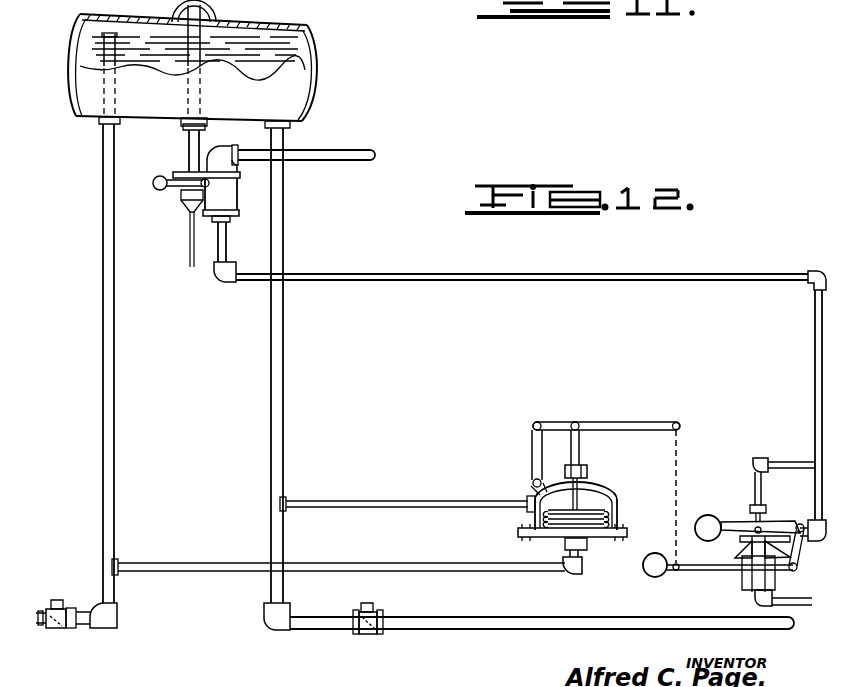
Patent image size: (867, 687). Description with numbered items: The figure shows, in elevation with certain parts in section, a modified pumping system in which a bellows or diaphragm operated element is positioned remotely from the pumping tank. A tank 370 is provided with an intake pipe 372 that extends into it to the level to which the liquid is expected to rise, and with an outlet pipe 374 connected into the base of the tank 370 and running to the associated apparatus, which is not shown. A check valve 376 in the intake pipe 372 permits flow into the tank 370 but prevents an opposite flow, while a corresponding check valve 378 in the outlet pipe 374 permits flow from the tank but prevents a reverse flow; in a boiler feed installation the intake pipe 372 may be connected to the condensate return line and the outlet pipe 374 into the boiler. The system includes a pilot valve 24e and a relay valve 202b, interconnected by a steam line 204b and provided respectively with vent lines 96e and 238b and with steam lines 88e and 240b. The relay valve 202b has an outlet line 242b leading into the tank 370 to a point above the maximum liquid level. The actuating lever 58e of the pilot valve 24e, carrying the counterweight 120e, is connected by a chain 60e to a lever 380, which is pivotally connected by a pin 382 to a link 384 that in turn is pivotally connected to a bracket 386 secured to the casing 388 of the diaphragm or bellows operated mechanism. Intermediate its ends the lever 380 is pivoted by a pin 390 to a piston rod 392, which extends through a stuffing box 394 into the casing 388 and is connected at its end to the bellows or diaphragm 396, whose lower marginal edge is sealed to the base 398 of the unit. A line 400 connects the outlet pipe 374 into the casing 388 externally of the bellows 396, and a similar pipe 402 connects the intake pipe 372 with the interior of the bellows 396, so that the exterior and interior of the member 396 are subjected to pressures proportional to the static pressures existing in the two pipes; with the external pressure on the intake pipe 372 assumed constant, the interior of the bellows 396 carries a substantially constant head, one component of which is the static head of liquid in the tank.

The tank 370 is at (320, 58).
The intake pipe 372 is at (114, 347).
The outlet pipe 374 is at (283, 370).
The check valve 376 is at (64, 630).
The check valve 378 is at (380, 611).
The lever 380 is at (605, 426).
The pin 382 is at (537, 421).
The link 384 is at (534, 446).
The bracket 386 is at (532, 483).
The casing 388 is at (595, 491).
The pin 390 is at (575, 421).
The piston rod 392 is at (570, 447).
The stuffing box 394 is at (585, 470).
The bellows or diaphragm 396 is at (615, 501).
The base 398 is at (549, 545).
The line 400 is at (343, 501).
The pipe 402 is at (330, 563).
The steam line 204b is at (508, 277).
The steam line 240b is at (340, 152).
The outlet line 242b is at (190, 148).
The relay valve 202b is at (229, 196).
The vent line 238b is at (192, 244).
The steam line 88e is at (770, 462).
The pilot valve 24e is at (788, 500).
The chain 60e is at (680, 466).
The counterweight 120e is at (652, 575).
The actuating lever 58e is at (695, 571).
The vent line 96e is at (781, 601).